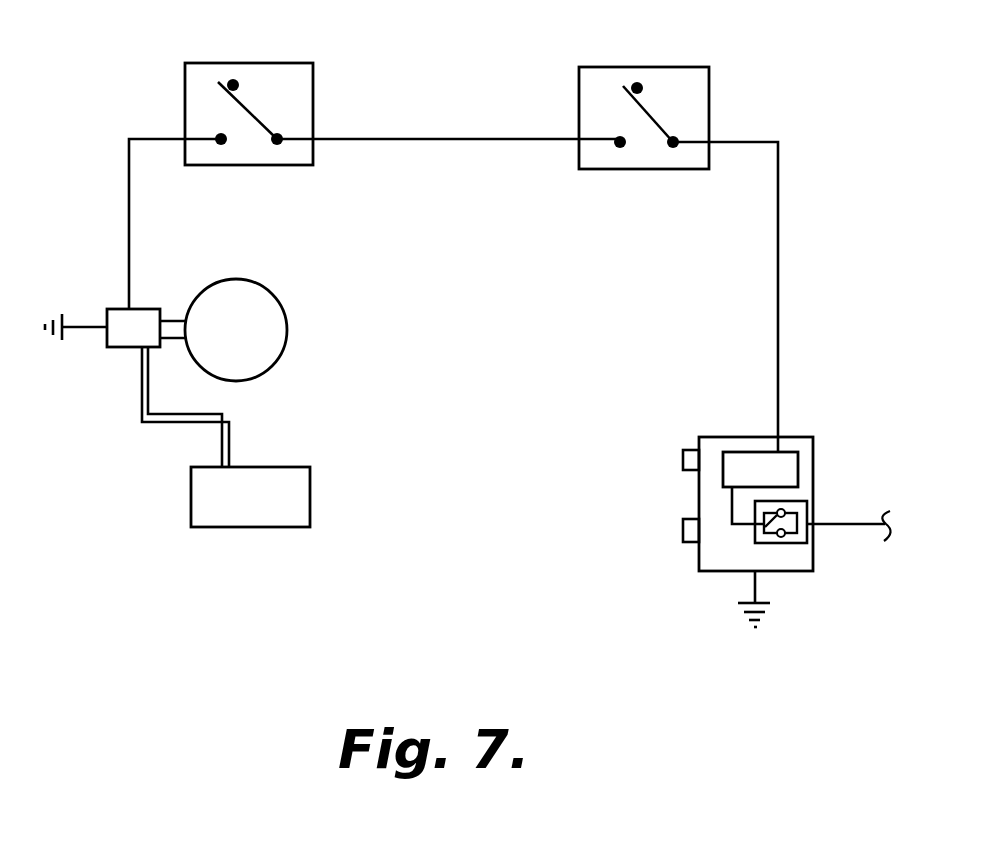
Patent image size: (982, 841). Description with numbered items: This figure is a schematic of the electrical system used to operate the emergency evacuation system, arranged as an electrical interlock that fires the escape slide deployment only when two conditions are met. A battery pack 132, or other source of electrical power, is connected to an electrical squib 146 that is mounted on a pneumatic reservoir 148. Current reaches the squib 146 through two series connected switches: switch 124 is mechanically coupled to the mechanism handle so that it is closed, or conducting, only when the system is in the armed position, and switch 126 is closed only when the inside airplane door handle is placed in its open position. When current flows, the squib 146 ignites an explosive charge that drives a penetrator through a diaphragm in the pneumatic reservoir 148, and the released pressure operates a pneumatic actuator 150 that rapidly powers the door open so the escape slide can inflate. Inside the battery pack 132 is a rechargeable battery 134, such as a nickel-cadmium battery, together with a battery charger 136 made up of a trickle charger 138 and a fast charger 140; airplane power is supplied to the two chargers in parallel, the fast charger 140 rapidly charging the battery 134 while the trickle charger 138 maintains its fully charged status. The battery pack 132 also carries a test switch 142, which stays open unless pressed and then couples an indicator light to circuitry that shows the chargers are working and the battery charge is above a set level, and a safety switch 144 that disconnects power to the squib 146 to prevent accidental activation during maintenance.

The switch 124 is at (709, 81).
The series connected switch 126 is at (313, 77).
The battery pack 132 is at (725, 437).
The rechargeable battery 134 is at (725, 478).
The battery charger 136 is at (768, 545).
The trickle charger 138 is at (781, 537).
The fast charger 140 is at (768, 523).
The test switch 142 is at (683, 538).
The safety switch 144 is at (686, 450).
The electrical squib 146 is at (115, 347).
The pneumatic reservoir 148 is at (287, 312).
The pneumatic actuator 150 is at (310, 472).